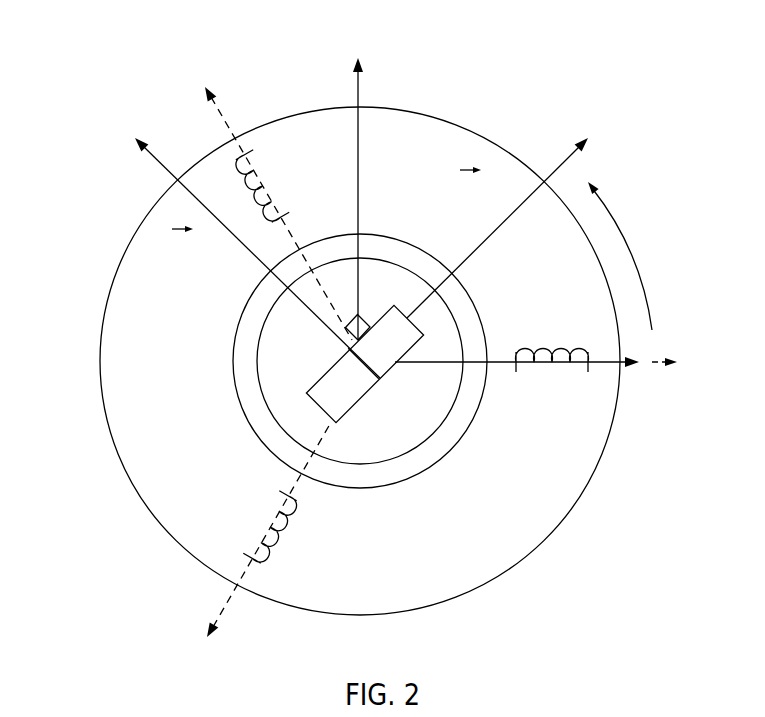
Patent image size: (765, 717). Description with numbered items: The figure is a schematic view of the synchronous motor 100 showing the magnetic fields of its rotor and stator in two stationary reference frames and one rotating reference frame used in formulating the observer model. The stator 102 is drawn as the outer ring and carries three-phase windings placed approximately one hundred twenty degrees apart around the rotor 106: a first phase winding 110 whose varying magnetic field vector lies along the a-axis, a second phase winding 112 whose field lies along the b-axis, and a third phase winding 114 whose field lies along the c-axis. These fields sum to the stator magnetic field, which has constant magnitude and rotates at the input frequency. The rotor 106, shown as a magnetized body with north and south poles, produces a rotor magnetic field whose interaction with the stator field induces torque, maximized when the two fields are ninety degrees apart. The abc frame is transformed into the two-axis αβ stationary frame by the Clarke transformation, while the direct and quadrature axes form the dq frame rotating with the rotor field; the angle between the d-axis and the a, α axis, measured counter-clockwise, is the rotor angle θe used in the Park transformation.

The synchronous motor 100 is at (502, 83).
The stator 102 is at (138, 438).
The rotor 106 is at (262, 353).
The first phase winding 110 is at (544, 343).
The second phase winding 112 is at (260, 192).
The third phase winding 114 is at (286, 528).